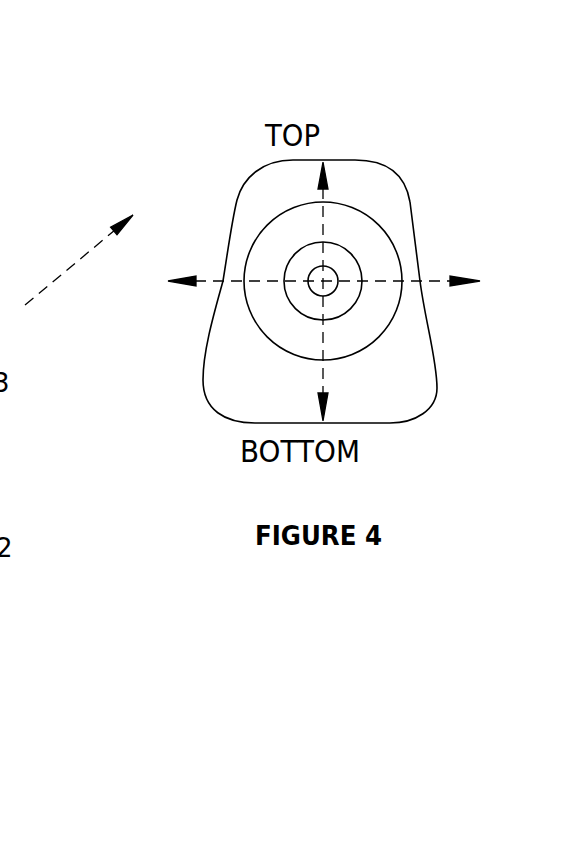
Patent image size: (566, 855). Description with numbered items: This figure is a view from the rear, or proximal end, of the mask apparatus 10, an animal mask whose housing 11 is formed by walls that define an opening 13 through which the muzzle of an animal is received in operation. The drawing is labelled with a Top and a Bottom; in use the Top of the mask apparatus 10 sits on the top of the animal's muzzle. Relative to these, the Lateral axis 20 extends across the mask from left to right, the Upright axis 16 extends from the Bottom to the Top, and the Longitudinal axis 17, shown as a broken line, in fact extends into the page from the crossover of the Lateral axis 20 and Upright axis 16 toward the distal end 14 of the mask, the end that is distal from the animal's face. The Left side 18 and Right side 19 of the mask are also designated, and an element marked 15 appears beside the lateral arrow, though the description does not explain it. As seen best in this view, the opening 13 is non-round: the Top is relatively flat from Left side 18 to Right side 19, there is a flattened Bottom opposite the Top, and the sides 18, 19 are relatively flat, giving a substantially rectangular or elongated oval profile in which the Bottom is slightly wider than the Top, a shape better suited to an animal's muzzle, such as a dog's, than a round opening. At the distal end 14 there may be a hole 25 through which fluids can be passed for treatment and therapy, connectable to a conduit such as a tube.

The mask apparatus 10 is at (246, 86).
The housing 11 is at (342, 134).
The opening 13 is at (408, 388).
The distal end 14 is at (350, 262).
The left direction arrow 15 is at (202, 284).
The Upright axis 16 is at (330, 335).
The Longitudinal axis 17 is at (72, 265).
The Left side 18 is at (228, 227).
The Right side 19 is at (402, 178).
The Lateral axis 20 is at (422, 281).
The hole 25 is at (318, 292).